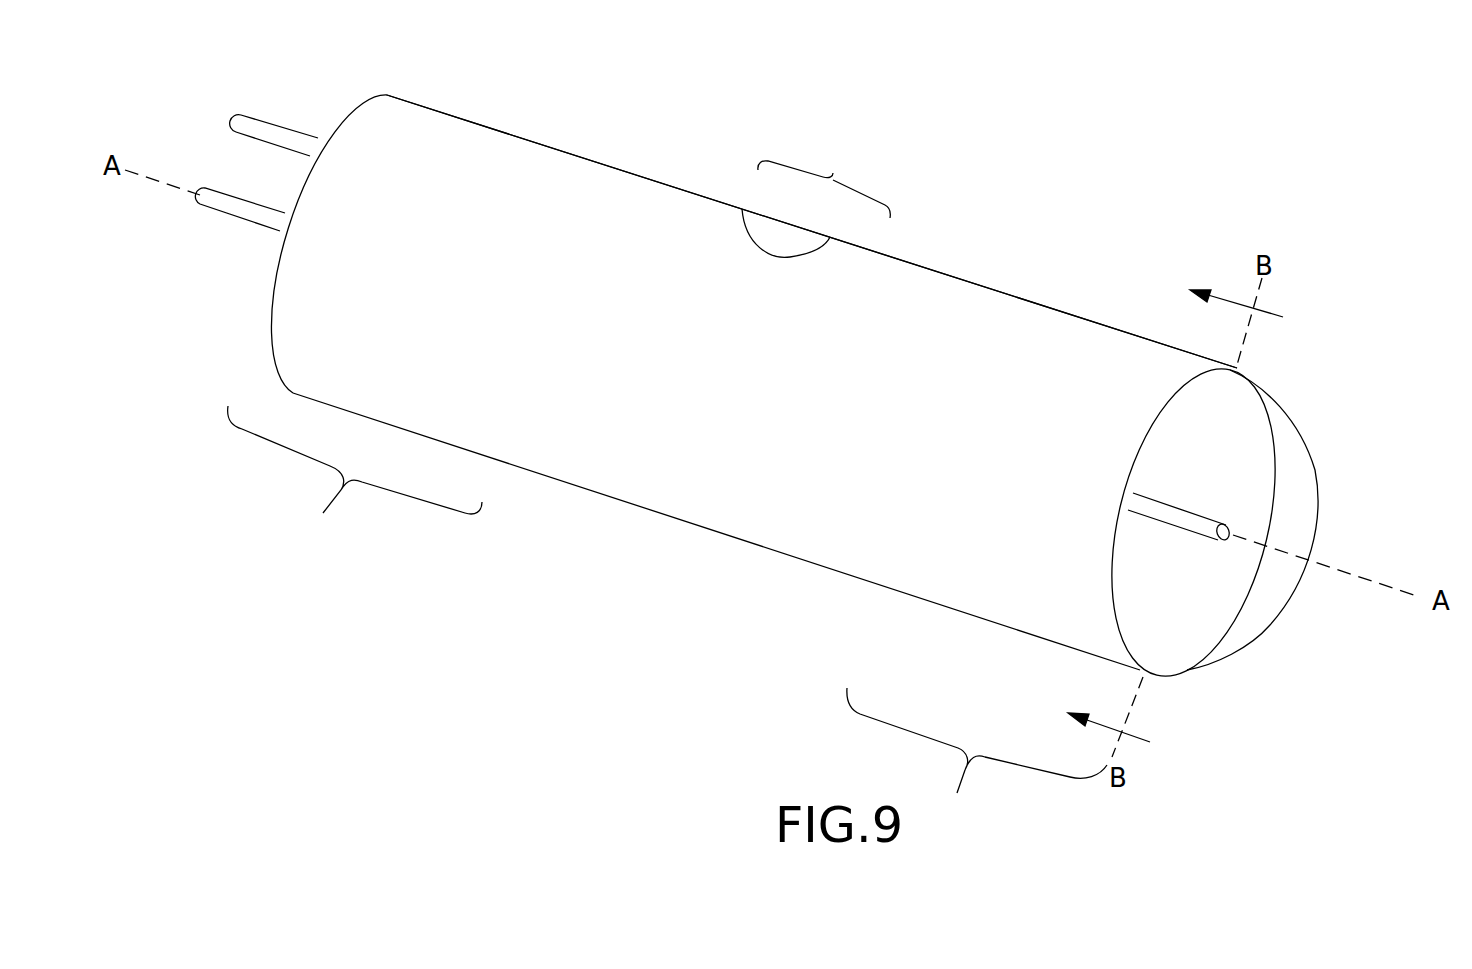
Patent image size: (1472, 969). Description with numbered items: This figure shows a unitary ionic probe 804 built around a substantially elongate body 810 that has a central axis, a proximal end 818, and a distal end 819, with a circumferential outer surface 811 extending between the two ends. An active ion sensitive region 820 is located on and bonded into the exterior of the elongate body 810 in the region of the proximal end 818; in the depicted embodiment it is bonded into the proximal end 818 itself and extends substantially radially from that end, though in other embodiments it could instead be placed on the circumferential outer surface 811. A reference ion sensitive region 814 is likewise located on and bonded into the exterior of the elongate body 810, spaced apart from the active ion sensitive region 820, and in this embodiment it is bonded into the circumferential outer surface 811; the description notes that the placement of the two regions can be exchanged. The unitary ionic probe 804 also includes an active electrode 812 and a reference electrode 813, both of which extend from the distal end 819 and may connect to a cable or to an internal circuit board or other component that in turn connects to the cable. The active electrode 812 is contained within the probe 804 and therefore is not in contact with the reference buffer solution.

The unitary ionic probe 804 is at (1222, 135).
The elongate body 810 is at (657, 503).
The circumferential outer surface 811 is at (490, 150).
The active electrode 812 is at (233, 218).
The reference electrode 813 is at (262, 117).
The reference ion sensitive region 814 is at (832, 177).
The proximal end 818 is at (977, 758).
The distal end 819 is at (355, 477).
The active ion sensitive region 820 is at (1317, 490).